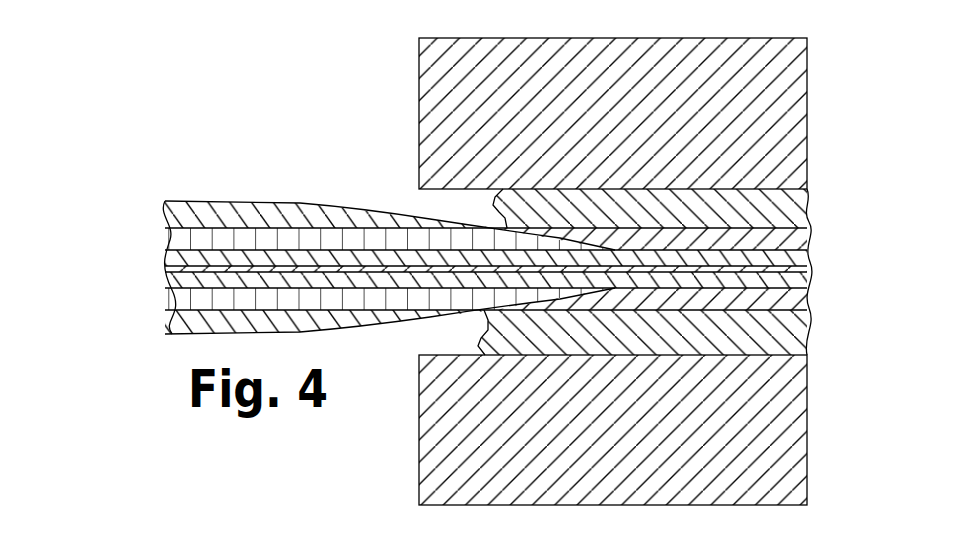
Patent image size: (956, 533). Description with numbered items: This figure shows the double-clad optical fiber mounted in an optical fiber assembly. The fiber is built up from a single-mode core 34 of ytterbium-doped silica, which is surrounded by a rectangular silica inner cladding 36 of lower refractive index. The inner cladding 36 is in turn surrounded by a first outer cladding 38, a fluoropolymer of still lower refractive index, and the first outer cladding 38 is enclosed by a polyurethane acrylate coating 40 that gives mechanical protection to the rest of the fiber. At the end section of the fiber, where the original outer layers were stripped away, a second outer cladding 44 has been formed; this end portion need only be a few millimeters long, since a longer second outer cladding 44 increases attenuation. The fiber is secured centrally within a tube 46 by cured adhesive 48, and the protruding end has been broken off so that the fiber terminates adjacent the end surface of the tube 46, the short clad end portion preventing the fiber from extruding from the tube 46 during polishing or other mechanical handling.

The single-mode core 34 is at (195, 268).
The inner cladding 36 is at (420, 257).
The first outer cladding 38 is at (200, 240).
The coating 40 is at (273, 213).
The second outer cladding 44 is at (775, 242).
The tube 46 is at (440, 112).
The cured adhesive 48 is at (500, 213).